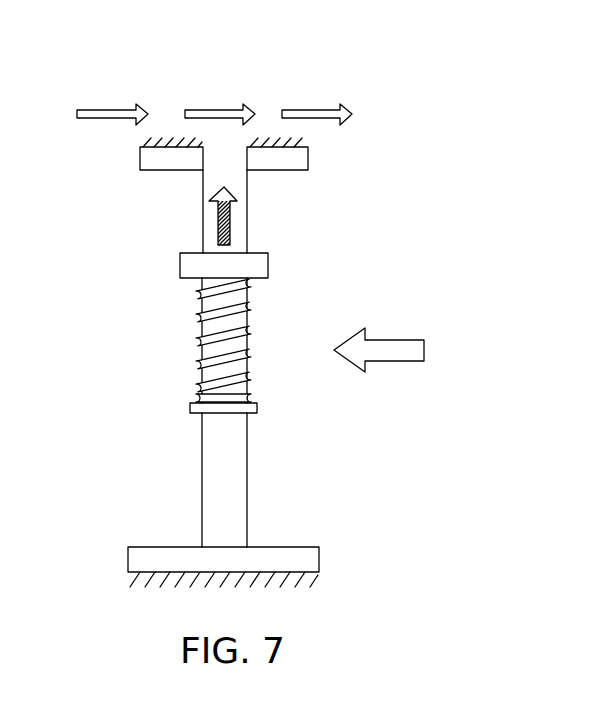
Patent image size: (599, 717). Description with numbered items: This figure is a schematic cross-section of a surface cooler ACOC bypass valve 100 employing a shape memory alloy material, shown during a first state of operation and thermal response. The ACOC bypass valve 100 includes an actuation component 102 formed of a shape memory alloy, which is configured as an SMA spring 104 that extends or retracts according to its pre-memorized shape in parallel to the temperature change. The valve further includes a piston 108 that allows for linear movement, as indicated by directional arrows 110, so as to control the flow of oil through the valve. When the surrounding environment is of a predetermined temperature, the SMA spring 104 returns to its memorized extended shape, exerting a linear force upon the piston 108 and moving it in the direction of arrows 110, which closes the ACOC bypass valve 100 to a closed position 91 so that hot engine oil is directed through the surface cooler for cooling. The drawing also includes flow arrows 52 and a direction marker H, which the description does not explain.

The airflow 52 is at (214, 110).
The ACOC bypass valve 100 is at (285, 343).
The closed position 91 is at (303, 181).
The piston 108 is at (247, 222).
The directional arrows 110 is at (203, 218).
The actuation component 102 is at (195, 315).
The SMA spring 104 is at (257, 328).
The horizontal direction H is at (400, 340).